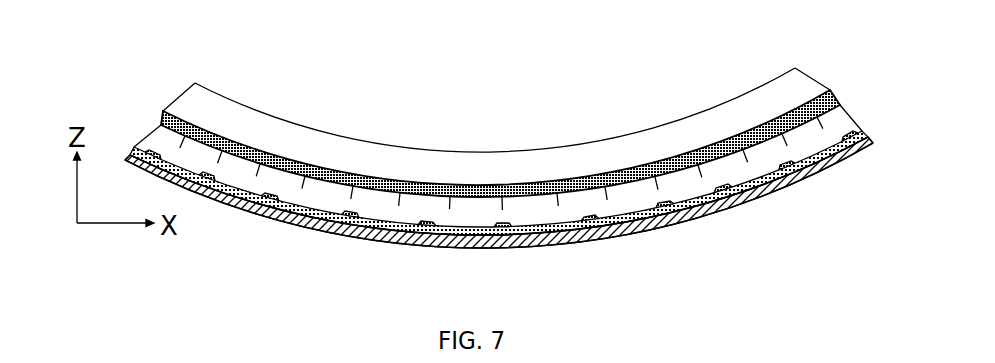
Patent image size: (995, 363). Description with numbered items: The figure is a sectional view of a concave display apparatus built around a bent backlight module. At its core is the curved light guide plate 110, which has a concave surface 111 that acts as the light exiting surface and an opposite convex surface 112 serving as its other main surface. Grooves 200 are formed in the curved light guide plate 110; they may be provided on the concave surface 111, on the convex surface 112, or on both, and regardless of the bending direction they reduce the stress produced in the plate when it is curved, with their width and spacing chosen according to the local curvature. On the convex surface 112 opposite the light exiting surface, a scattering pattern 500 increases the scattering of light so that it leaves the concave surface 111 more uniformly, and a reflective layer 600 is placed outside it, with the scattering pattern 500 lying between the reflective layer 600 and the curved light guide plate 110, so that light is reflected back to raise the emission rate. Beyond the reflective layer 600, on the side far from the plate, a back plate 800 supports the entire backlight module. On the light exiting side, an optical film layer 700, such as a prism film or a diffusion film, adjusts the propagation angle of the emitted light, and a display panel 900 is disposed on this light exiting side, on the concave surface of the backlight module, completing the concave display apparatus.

The display panel 900 is at (677, 142).
The optical film layer 700 is at (288, 157).
The grooves 200 is at (400, 202).
The concave surface 111 is at (222, 139).
The curved light guide plate 110 is at (723, 170).
The convex surface 112 is at (293, 220).
The back plate 800 is at (333, 235).
The scattering pattern 500 is at (620, 232).
The reflective layer 600 is at (482, 245).